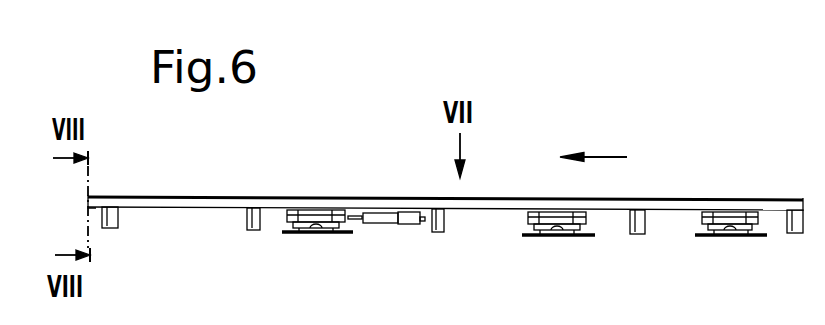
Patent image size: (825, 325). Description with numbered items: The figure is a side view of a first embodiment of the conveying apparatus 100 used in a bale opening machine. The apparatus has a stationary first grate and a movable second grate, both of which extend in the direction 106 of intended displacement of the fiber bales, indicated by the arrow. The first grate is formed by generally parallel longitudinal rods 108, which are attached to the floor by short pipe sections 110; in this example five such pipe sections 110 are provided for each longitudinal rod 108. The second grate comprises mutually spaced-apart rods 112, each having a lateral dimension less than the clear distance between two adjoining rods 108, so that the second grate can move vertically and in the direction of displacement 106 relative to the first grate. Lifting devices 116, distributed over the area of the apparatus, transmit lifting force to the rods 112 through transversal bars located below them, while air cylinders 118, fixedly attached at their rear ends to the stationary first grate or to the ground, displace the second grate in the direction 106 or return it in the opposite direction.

The conveying apparatus 100 is at (296, 168).
The direction of intended displacement 106 is at (613, 158).
The rods 108 is at (183, 205).
The pipe sections 110 is at (118, 228).
The rods 112 is at (92, 196).
The lifting devices 116 is at (303, 234).
The air cylinders 118 is at (382, 220).